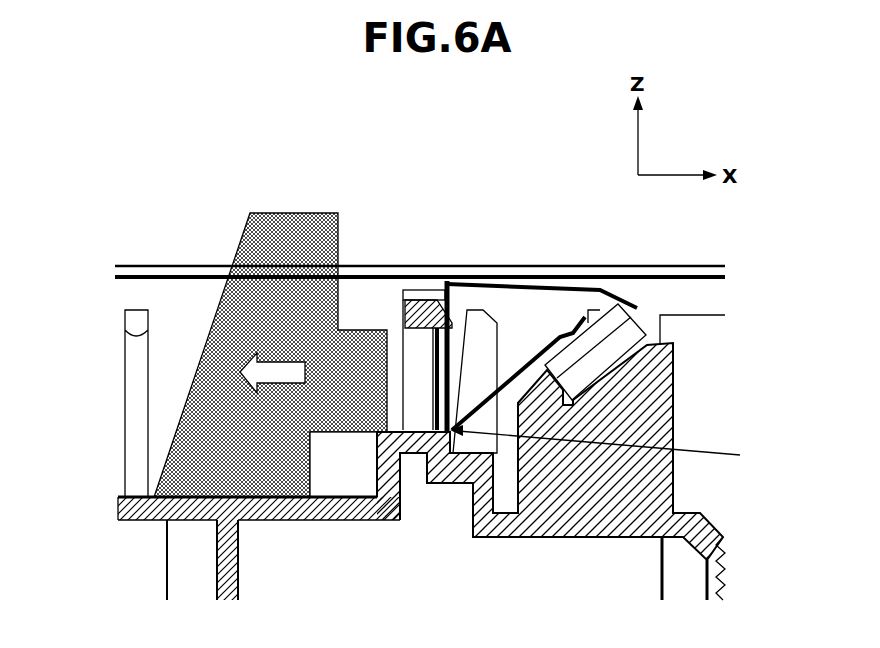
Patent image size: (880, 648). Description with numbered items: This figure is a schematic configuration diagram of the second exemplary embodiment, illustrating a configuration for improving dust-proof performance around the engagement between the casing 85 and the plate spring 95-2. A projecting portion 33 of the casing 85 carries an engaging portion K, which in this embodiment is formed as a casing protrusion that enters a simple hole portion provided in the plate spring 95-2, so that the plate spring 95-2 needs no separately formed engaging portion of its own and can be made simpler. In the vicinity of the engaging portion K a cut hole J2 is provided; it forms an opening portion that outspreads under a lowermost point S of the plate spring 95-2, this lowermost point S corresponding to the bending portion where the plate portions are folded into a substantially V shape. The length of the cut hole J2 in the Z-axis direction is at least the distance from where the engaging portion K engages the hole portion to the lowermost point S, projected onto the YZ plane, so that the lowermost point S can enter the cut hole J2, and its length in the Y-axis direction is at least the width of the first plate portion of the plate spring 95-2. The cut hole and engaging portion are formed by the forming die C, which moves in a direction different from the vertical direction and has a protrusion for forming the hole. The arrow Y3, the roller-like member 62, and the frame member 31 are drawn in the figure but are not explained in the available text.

The forming die C is at (292, 233).
The mounting direction arrow Y3 is at (272, 368).
The engaging portion K is at (440, 290).
The plate spring 95-2 is at (535, 285).
The roller 62 is at (643, 333).
The projecting portion 33 is at (375, 452).
The frame 31 is at (653, 413).
The casing 85 is at (123, 510).
The lowermost point S is at (604, 449).
The cut hole J2 is at (417, 403).